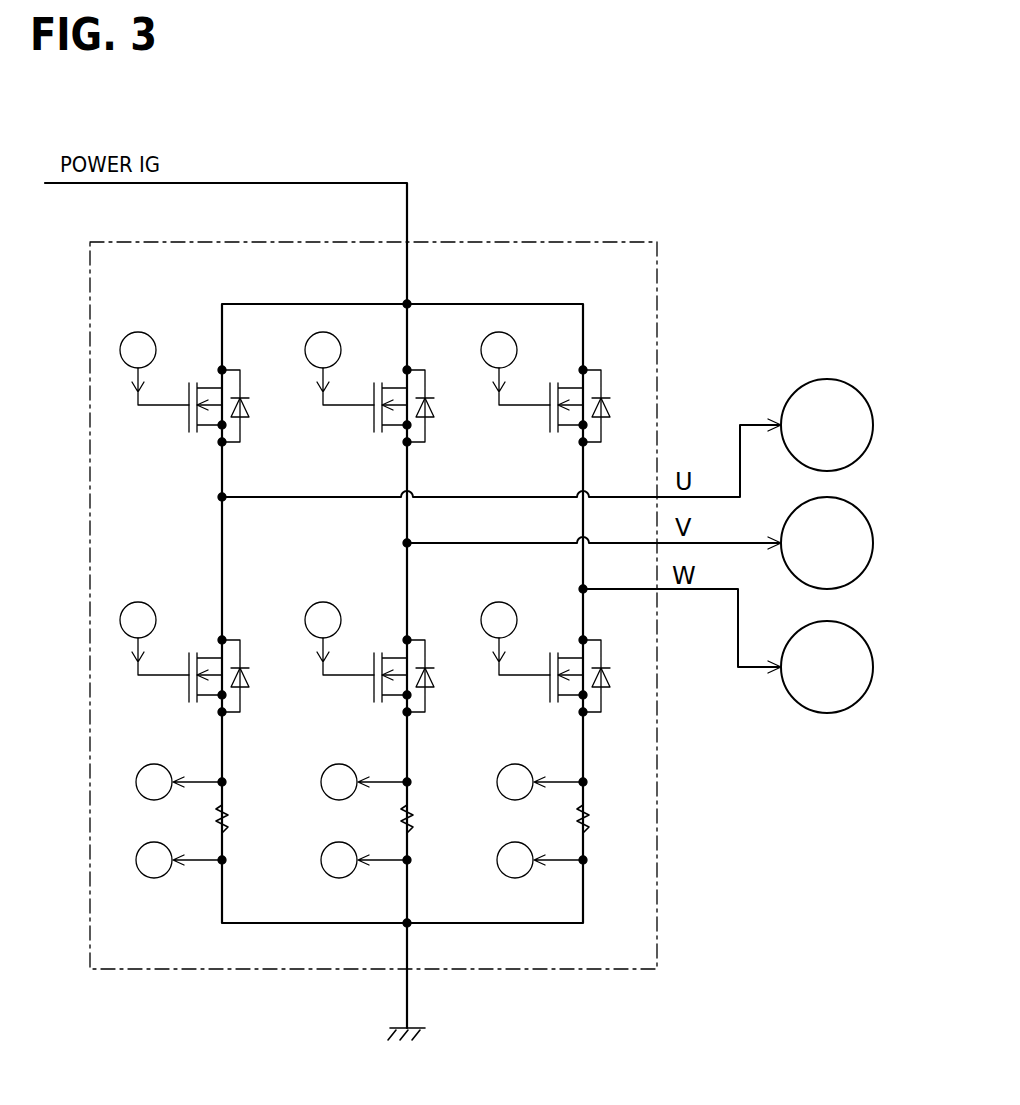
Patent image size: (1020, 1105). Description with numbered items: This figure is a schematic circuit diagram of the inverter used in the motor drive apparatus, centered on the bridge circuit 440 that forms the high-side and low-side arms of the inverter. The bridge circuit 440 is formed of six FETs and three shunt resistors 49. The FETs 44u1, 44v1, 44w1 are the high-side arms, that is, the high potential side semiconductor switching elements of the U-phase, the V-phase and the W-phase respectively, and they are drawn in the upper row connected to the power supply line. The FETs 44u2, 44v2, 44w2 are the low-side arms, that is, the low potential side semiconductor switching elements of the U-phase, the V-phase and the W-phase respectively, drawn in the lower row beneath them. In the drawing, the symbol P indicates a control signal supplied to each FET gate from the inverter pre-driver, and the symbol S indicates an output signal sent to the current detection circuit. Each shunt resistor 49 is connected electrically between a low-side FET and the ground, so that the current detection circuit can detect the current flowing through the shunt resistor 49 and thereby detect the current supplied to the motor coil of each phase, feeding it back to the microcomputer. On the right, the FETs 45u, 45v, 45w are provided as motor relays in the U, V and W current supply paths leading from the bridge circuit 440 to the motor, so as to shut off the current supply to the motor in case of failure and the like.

The bridge circuit 440 is at (571, 242).
The FET 44u1 is at (207, 432).
The FET 44v1 is at (392, 432).
The FET 44w1 is at (568, 432).
The FET 44u2 is at (207, 655).
The FET 44v2 is at (392, 655).
The FET 44w2 is at (569, 655).
The FET 45u is at (840, 378).
The FET 45v is at (840, 496).
The FET 45w is at (840, 622).
The shunt resistor 49 is at (229, 822).